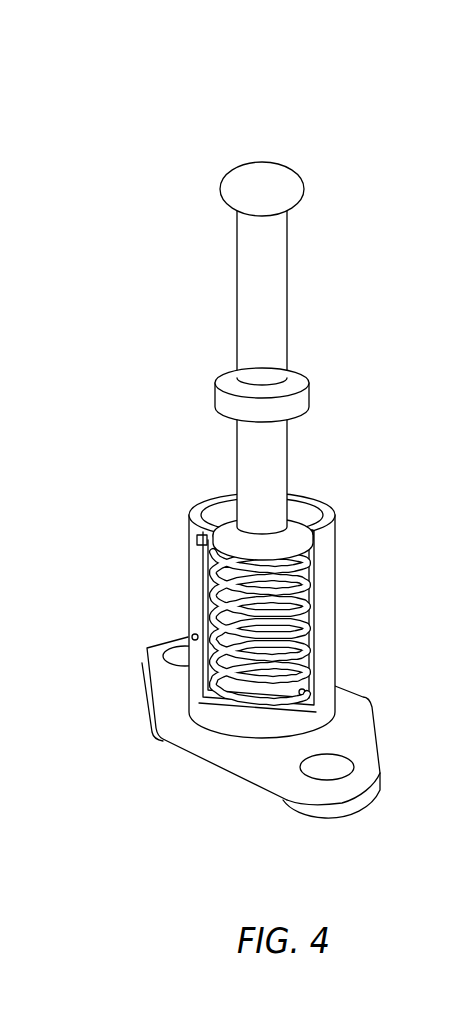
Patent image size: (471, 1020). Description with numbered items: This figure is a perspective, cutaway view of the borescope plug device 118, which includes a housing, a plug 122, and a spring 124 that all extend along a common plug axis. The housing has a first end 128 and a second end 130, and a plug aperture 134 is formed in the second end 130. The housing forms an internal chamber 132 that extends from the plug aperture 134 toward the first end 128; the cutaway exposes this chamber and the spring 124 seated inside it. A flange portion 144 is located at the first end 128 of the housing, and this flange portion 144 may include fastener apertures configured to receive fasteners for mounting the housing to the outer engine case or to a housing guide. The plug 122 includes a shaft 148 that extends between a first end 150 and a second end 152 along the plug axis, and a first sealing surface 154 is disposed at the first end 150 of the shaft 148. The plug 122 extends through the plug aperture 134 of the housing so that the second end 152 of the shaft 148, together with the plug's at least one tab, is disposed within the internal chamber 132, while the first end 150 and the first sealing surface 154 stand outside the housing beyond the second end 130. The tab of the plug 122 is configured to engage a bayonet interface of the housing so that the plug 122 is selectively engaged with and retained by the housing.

The borescope plug device 118 is at (385, 122).
The plug 122 is at (295, 293).
The spring 124 is at (305, 608).
The first end 128 is at (233, 800).
The second end 130 is at (326, 494).
The internal chamber 132 is at (205, 588).
The plug aperture 134 is at (215, 492).
The flange portion 144 is at (203, 740).
The shaft 148 is at (237, 272).
The first end 150 is at (262, 150).
The second end 152 is at (270, 658).
The first sealing surface 154 is at (293, 167).